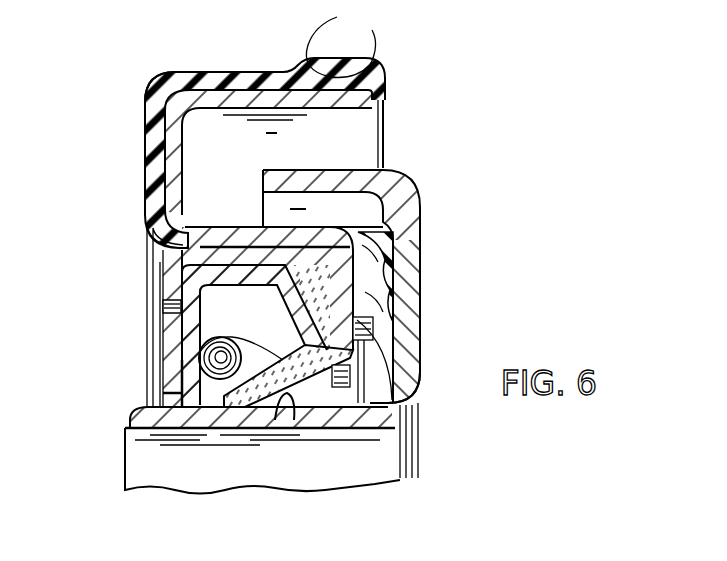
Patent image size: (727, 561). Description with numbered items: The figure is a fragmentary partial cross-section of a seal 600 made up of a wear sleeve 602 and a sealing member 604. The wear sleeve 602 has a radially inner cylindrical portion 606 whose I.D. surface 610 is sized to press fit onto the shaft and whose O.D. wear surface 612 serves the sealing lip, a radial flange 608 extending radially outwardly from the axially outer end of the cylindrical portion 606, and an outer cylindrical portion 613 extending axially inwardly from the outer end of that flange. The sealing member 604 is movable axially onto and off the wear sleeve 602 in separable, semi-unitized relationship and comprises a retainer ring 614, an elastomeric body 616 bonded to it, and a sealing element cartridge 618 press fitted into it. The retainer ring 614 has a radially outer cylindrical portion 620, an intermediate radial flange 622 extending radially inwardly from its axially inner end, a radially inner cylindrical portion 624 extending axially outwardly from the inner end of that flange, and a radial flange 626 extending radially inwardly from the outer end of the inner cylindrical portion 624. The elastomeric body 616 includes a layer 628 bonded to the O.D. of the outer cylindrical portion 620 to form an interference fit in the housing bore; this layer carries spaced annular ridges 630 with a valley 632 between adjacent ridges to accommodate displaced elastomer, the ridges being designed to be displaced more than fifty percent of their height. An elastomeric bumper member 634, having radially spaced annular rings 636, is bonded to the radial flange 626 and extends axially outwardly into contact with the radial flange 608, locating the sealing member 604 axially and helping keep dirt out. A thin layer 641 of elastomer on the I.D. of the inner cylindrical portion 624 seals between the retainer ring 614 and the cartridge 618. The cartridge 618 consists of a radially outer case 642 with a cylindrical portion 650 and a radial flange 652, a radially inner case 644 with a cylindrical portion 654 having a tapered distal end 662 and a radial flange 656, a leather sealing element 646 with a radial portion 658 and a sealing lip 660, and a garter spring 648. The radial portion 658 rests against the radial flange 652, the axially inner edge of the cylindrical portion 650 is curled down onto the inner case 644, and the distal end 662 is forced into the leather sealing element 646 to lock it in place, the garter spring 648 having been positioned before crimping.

The seal 600 is at (414, 98).
The wear sleeve 602 is at (438, 332).
The sealing member 604 is at (132, 139).
The radially inner cylindrical portion 606 is at (312, 420).
The radial flange 608 is at (408, 357).
The I.D. surface 610 is at (145, 432).
The O.D. wear surface 612 is at (278, 425).
The outer cylindrical portion 613 is at (356, 180).
The retainer ring 614 is at (197, 166).
The elastomeric body 616 is at (154, 84).
The sealing element cartridge 618 is at (169, 365).
The radially outer cylindrical portion 620 is at (293, 102).
The intermediate radial flange 622 is at (182, 150).
The radially inner cylindrical portion 624 is at (235, 232).
The radial flange 626 is at (395, 368).
The layer of elastomer 628 is at (242, 78).
The annular ridges 630 is at (337, 17).
The valley 632 is at (326, 72).
The elastomeric bumper member 634 is at (392, 303).
The annular rings 636 is at (390, 239).
The thin layer of elastomer 641 is at (306, 224).
The radially outer case 642 is at (185, 248).
The radially inner case 644 is at (165, 312).
The leather sealing element 646 is at (182, 343).
The garter spring 648 is at (187, 380).
The cylindrical portion 650 is at (147, 218).
The radial flange 652 is at (397, 403).
The cylindrical portion 654 is at (237, 283).
The radial flange 656 is at (190, 322).
The radial portion 658 is at (390, 262).
The sealing lip 660 is at (232, 400).
The distal end 662 is at (288, 296).